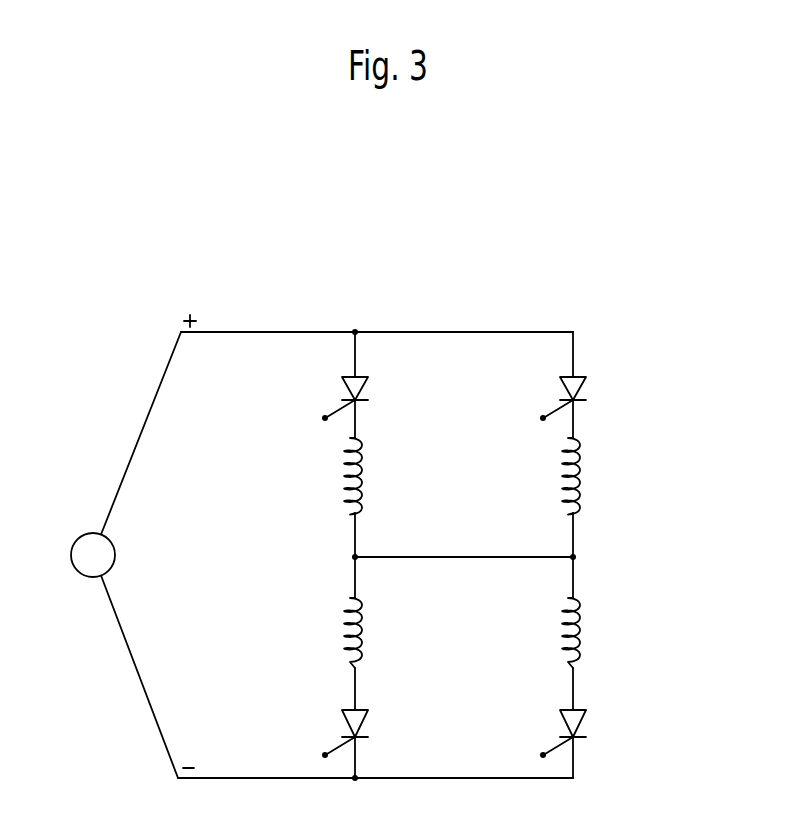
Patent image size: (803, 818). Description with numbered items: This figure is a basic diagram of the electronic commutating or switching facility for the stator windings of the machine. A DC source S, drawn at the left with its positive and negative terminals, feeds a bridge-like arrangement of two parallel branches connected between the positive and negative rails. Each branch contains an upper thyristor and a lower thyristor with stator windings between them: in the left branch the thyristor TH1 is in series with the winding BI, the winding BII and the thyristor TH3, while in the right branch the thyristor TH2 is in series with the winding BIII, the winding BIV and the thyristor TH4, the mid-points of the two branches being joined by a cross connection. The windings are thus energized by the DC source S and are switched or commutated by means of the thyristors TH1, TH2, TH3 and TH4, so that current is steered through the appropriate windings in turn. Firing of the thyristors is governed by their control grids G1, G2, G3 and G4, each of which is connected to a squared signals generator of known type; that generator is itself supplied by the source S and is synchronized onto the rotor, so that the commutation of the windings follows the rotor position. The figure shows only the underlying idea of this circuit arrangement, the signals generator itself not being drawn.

The DC source S is at (80, 540).
The thyristor TH1 is at (346, 389).
The thyristor TH2 is at (582, 393).
The thyristor TH3 is at (346, 722).
The thyristor TH4 is at (582, 722).
The control grid G1 is at (314, 432).
The control grid G2 is at (534, 430).
The control grid G3 is at (318, 765).
The control grid G4 is at (534, 763).
The stator winding BI is at (346, 490).
The stator winding BII is at (346, 648).
The stator winding BIII is at (582, 490).
The stator winding BIV is at (582, 644).